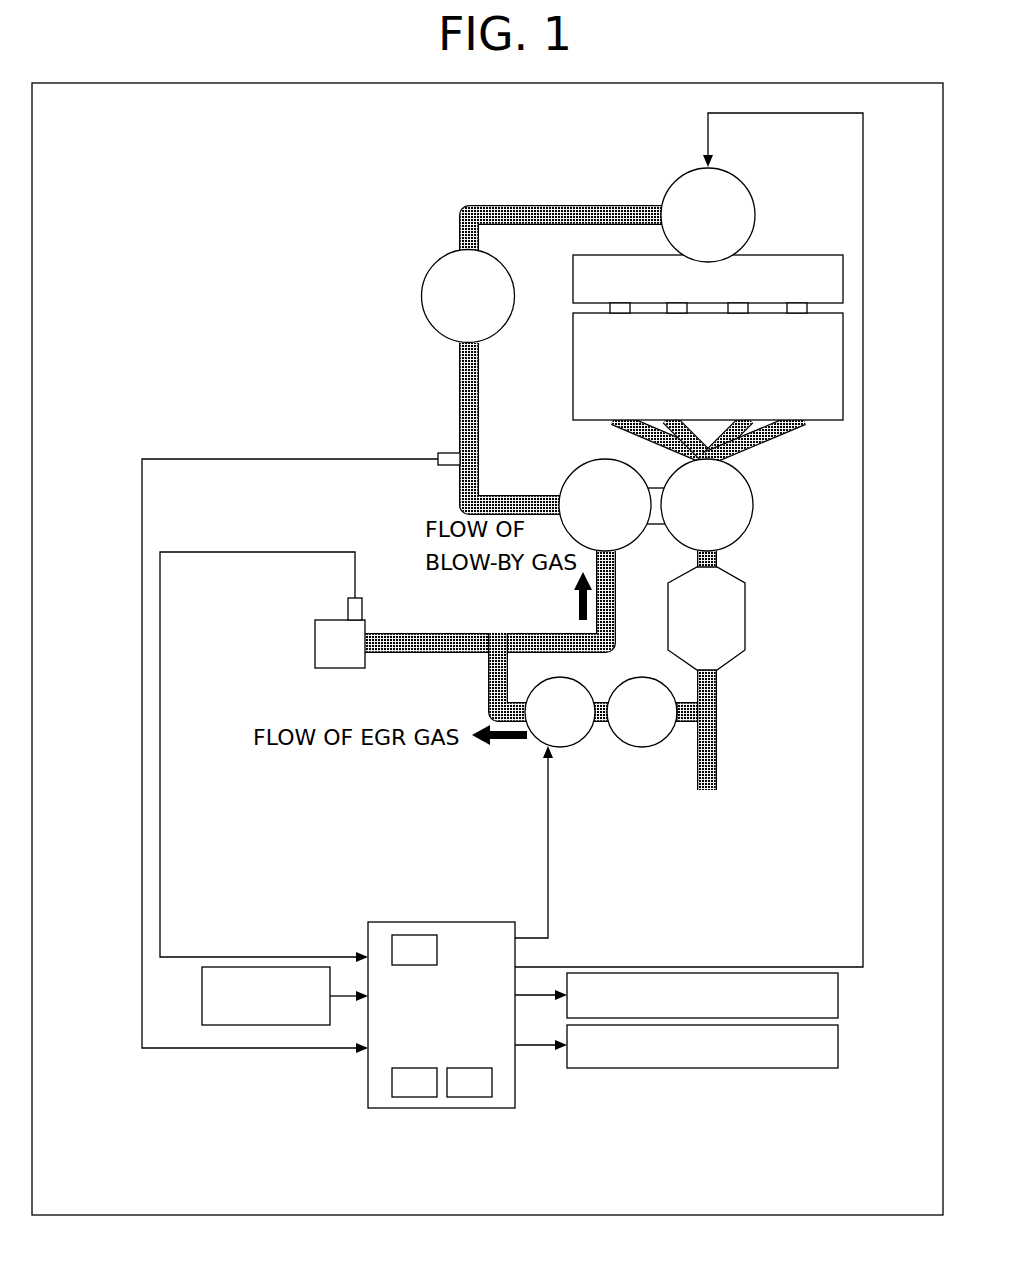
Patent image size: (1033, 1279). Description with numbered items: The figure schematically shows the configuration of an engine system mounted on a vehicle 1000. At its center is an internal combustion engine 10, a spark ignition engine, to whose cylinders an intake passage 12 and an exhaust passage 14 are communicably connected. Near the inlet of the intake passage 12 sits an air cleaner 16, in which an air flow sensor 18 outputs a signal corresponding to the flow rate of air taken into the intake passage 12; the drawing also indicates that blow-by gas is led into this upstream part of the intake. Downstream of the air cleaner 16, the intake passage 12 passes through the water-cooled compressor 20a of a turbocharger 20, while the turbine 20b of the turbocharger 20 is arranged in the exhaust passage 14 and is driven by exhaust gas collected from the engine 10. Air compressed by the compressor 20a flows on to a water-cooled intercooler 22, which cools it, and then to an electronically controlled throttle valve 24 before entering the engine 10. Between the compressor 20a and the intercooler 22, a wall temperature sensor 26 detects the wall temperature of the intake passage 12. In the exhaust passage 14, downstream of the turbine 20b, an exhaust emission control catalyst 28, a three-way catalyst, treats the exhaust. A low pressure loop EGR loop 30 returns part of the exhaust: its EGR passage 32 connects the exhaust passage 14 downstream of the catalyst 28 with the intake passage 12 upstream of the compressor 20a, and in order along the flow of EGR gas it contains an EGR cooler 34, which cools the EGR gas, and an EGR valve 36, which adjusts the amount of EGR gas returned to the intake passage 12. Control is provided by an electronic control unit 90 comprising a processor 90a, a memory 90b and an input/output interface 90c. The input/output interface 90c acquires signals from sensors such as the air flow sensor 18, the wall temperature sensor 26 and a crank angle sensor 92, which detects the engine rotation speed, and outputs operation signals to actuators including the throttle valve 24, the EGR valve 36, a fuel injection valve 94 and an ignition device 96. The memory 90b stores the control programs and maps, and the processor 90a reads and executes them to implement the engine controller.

The vehicle 1000 is at (88, 78).
The internal combustion engine 10 is at (795, 222).
The intake passage 12 is at (515, 492).
The exhaust passage 14 is at (717, 752).
The air cleaner 16 is at (315, 645).
The air flow sensor 18 is at (362, 605).
The turbocharger 20 is at (672, 511).
The compressor 20a is at (572, 470).
The turbine 20b is at (755, 505).
The intercooler 22 is at (422, 300).
The throttle valve 24 is at (735, 172).
The wall temperature sensor 26 is at (447, 453).
The exhaust emission control catalyst 28 is at (745, 617).
The EGR loop 30 is at (468, 700).
The EGR passage 32 is at (685, 698).
The EGR cooler 34 is at (666, 743).
The EGR valve 36 is at (578, 684).
The electronic control unit 90 is at (444, 1012).
The processor 90a is at (417, 1097).
The memory 90b is at (472, 1097).
The input/output interface 90c is at (437, 950).
The crank angle sensor 92 is at (202, 997).
The fuel injection valve 94 is at (840, 995).
The ignition device 96 is at (840, 1045).